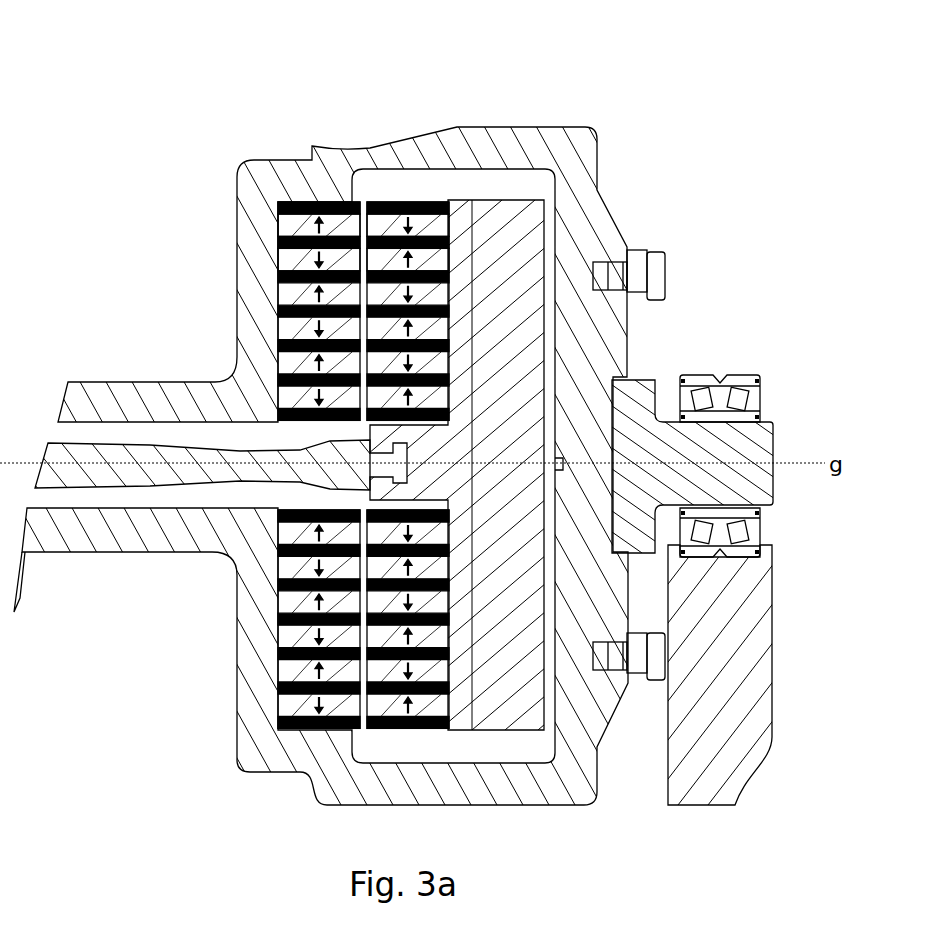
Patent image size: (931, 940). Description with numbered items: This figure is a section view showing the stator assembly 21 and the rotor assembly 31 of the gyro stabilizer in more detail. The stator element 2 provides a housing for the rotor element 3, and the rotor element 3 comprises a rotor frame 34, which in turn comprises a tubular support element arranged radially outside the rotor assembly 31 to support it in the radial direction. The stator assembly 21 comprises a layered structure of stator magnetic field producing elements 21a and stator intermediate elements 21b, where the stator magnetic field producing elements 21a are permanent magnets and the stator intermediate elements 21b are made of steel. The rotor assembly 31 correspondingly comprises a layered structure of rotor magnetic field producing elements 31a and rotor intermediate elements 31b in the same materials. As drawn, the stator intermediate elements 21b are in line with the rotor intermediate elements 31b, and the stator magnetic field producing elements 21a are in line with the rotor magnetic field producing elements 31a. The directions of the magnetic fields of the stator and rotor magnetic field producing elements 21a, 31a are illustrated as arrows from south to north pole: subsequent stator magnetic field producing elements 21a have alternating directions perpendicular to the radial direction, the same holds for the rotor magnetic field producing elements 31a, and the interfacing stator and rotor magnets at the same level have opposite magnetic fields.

The stator element 2 is at (249, 408).
The rotor element 3 is at (478, 227).
The stator assembly 21 is at (340, 203).
The stator magnetic field producing elements 21a is at (283, 220).
The stator intermediate elements 21b is at (280, 240).
The rotor assembly 31 is at (385, 223).
The rotor magnetic field producing elements 31a is at (390, 222).
The rotor intermediate elements 31b is at (410, 207).
The rotor frame 34 is at (147, 462).